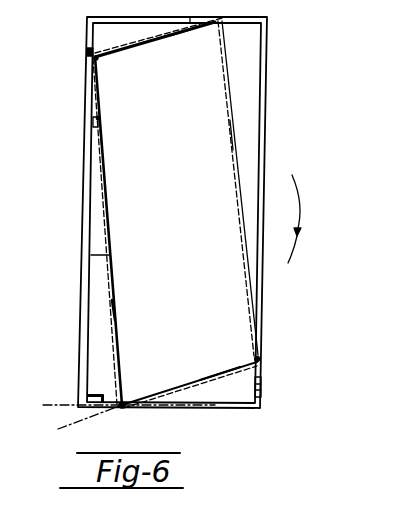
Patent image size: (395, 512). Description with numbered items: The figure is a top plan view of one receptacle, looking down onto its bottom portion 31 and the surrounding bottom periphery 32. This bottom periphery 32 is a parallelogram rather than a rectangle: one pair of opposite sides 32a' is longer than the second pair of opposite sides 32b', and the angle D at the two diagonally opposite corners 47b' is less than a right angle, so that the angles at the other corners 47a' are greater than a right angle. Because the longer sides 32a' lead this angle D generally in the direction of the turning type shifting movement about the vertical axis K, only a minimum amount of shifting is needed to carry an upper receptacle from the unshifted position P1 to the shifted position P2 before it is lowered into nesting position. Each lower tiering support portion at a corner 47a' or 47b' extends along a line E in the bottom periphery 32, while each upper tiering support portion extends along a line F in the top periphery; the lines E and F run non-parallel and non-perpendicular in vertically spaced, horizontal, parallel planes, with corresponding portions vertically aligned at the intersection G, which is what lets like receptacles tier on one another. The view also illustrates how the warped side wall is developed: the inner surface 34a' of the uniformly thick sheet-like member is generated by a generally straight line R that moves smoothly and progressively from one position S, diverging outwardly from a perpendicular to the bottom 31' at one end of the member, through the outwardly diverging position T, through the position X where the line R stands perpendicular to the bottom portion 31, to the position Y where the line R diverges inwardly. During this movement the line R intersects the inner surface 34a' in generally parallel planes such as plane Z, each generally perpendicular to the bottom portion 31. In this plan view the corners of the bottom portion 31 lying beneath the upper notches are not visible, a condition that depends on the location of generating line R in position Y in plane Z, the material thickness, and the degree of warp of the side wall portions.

The bottom portion 31 is at (154, 212).
The bottom periphery 32 is at (178, 55).
The plane Z is at (80, 47).
The generating line in position Y YR is at (98, 60).
The generating line in position X XR is at (99, 118).
The position T is at (101, 140).
The angle D is at (222, 95).
The longer sides of bottom periphery 32a' is at (215, 136).
The bottom portion 31' is at (165, 181).
The vertical axis K is at (176, 211).
The straight line R is at (104, 254).
The inner surface 34a' is at (134, 308).
The unshifted position P1 is at (297, 205).
The movement direction MR is at (298, 222).
The shifted position P2 is at (295, 236).
The generating line in position S RS is at (100, 395).
The line F is at (56, 405).
The line E is at (66, 428).
The intersection G is at (123, 410).
The corner of bottom periphery 47b' is at (105, 423).
The shorter sides of bottom periphery 32b' is at (221, 367).
The corner of bottom periphery 47a' is at (278, 361).
The position S is at (261, 386).